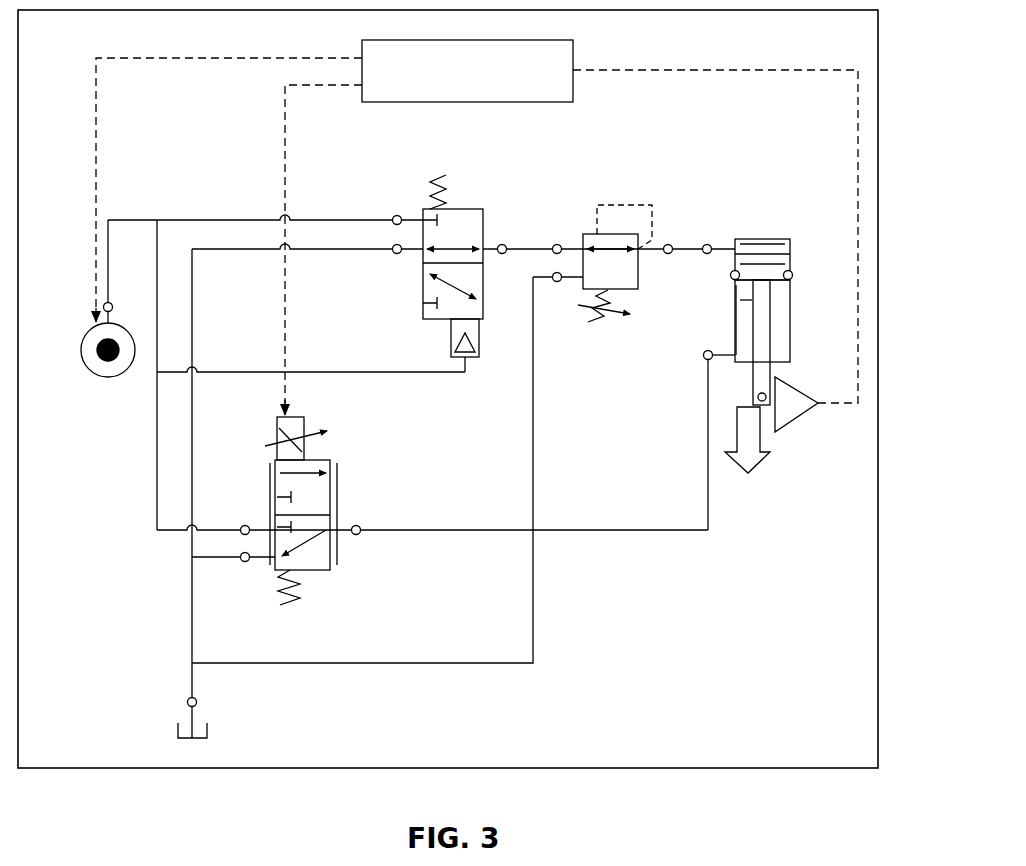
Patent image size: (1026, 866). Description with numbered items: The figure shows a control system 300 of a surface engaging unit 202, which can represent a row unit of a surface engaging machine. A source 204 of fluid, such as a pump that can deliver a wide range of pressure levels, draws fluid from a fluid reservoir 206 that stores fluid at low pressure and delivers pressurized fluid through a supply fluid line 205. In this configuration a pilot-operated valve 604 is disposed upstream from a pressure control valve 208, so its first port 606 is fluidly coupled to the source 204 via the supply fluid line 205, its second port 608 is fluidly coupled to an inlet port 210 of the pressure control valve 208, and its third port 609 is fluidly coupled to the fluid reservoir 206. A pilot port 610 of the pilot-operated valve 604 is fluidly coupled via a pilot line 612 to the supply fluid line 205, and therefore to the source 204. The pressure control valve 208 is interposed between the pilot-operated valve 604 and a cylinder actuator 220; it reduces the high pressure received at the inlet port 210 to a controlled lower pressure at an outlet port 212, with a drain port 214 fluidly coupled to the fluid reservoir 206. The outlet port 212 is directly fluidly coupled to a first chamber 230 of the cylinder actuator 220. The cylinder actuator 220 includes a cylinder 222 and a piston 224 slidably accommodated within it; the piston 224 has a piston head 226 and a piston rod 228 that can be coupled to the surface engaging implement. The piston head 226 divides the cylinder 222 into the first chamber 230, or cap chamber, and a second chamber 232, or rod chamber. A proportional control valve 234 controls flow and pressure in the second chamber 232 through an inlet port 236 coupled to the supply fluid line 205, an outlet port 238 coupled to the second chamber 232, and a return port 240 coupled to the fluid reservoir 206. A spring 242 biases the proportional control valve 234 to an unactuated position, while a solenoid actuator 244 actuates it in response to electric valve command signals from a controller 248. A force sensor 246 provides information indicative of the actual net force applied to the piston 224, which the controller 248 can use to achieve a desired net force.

The surface engaging unit 202 is at (878, 232).
The source of fluid 204 is at (83, 350).
The supply fluid line 205 is at (216, 220).
The fluid reservoir 206 is at (178, 727).
The pressure control valve 208 is at (588, 233).
The inlet port 210 is at (557, 243).
The outlet port 212 is at (668, 243).
The drain port 214 is at (557, 283).
The cylinder actuator 220 is at (778, 238).
The cylinder 222 is at (735, 296).
The piston 224 is at (752, 334).
The piston head 226 is at (774, 263).
The piston rod 228 is at (765, 370).
The first chamber 230 is at (762, 246).
The second chamber 232 is at (748, 326).
The proportional control valve 234 is at (330, 565).
The inlet port 236 is at (245, 524).
The outlet port 238 is at (357, 524).
The return port 240 is at (245, 563).
The spring 242 is at (300, 597).
The solenoid actuator 244 is at (306, 440).
The force sensor 246 is at (797, 420).
The controller 248 is at (432, 102).
The control system 300 is at (205, 140).
The pilot-operated valve 604 is at (470, 208).
The first port 606 is at (397, 213).
The second port 608 is at (504, 243).
The third port 609 is at (397, 256).
The pilot port 610 is at (467, 360).
The pilot line 612 is at (413, 372).